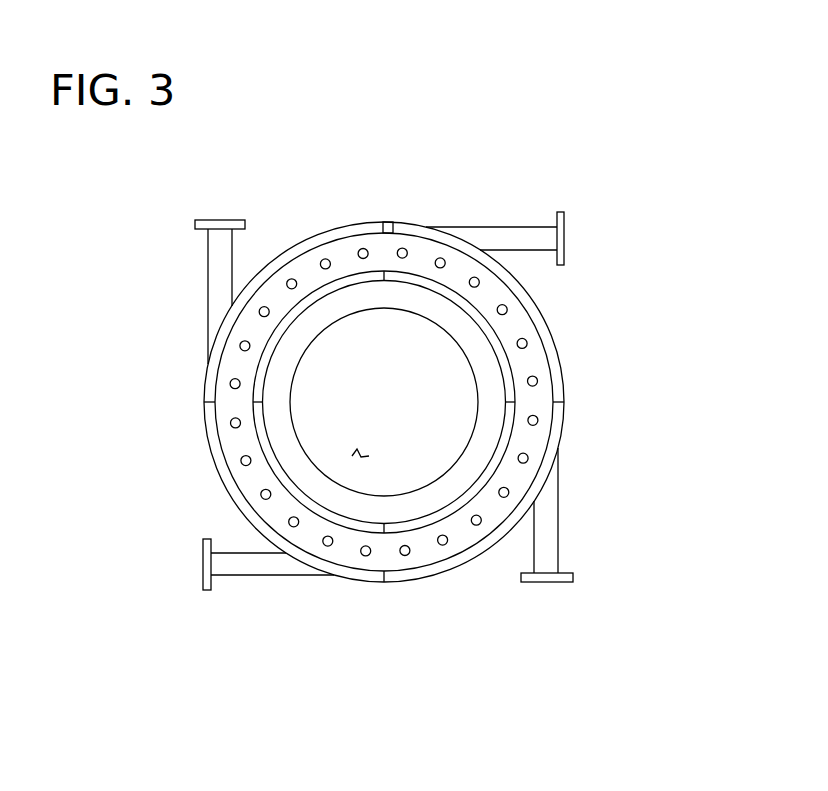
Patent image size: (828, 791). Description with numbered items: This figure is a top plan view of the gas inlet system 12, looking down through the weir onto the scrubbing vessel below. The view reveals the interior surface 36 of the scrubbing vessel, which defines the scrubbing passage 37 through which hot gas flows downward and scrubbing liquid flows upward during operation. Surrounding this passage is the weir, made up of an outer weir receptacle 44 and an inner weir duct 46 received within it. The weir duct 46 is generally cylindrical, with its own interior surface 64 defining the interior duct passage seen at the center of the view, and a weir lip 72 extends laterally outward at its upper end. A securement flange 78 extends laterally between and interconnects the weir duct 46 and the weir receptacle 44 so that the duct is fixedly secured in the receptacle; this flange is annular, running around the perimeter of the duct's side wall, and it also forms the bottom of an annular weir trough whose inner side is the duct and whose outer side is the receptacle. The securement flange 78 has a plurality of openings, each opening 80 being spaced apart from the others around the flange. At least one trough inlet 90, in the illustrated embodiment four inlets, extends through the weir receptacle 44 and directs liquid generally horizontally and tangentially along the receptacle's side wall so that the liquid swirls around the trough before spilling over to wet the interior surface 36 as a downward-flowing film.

The gas inlet system 12 is at (603, 201).
The interior surface 36 is at (308, 456).
The scrubbing passage 37 is at (352, 456).
The outer weir receptacle 44 is at (568, 394).
The inner weir duct 46 is at (505, 336).
The interior surface 64 is at (263, 397).
The weir lip 72 is at (551, 666).
The securement flange 78 is at (383, 250).
The opening 80 is at (326, 258).
The trough inlet 90 is at (218, 245).